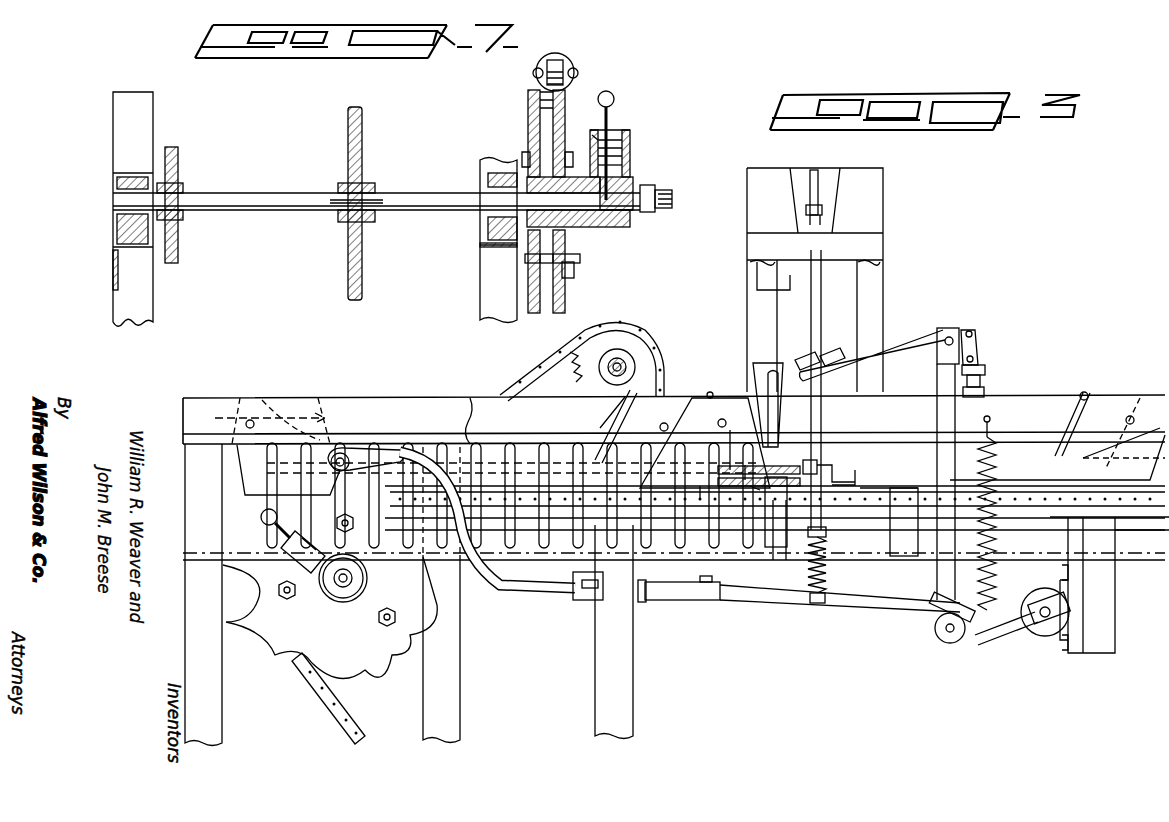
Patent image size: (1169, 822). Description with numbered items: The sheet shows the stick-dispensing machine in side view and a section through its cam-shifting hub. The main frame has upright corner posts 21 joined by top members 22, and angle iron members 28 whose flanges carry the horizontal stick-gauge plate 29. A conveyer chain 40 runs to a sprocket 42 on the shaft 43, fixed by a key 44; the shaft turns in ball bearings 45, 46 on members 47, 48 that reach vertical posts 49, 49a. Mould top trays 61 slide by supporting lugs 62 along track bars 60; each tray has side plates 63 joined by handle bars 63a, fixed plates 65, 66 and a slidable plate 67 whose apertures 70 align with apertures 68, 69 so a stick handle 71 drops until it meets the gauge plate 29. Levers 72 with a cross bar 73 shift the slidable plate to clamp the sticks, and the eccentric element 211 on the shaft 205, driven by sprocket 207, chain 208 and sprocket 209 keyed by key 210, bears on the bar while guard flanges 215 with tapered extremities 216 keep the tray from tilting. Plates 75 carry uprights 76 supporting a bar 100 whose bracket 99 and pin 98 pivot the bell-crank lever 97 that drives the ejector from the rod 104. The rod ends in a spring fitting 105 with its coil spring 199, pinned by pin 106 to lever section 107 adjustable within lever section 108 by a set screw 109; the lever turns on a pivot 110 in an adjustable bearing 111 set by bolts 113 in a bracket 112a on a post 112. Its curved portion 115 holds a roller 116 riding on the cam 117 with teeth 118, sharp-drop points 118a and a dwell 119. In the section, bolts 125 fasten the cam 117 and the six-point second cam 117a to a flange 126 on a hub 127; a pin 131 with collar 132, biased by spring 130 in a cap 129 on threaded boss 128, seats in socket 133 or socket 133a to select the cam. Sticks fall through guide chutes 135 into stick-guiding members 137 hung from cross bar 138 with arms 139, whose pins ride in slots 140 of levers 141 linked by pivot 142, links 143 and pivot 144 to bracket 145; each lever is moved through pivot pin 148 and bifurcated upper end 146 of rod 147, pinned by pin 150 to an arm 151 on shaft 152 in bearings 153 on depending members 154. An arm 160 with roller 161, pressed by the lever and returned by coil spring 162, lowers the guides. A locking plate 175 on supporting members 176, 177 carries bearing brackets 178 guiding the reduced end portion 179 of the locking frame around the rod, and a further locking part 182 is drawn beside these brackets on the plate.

In FIG. 5, the upright corner post 21 is at (190, 735).
In FIG. 5, the top member 22 is at (1042, 438).
In FIG. 5, the angle iron member 28 is at (1130, 562).
In FIG. 5, the stick-gauge plate 29 is at (497, 605).
In FIG. 5, the endless conveyer chain 40 is at (345, 732).
In FIG. 7, the sprocket 42 is at (362, 140).
In FIG. 7, the shaft 43 is at (410, 195).
In FIG. 5, the shaft 43 is at (340, 590).
In FIG. 7, the key 44 is at (368, 187).
In FIG. 7, the ball bearing 45 is at (115, 235).
In FIG. 7, the ball bearing 46 is at (487, 233).
In FIG. 7, the longitudinally extending member 47 is at (113, 265).
In FIG. 7, the member 48 is at (490, 248).
In FIG. 7, the vertical post 49 is at (150, 298).
In FIG. 7, the vertical post 49a is at (490, 296).
In FIG. 5, the vertical post 49a is at (455, 706).
In FIG. 5, the track bar 60 is at (183, 412).
In FIG. 5, the mould top tray 61 is at (490, 470).
In FIG. 5, the supporting lug 62 is at (252, 420).
In FIG. 5, the side plate 63 is at (702, 420).
In FIG. 5, the handle bar 63a is at (712, 395).
In FIG. 5, the horizontal plate 65 is at (716, 468).
In FIG. 5, the horizontal plate 66 is at (708, 488).
In FIG. 5, the slidable plate 67 is at (718, 478).
In FIG. 5, the aperture 68 is at (748, 465).
In FIG. 5, the aperture 69 is at (778, 502).
In FIG. 5, the aperture 70 is at (760, 490).
In FIG. 5, the stick handle 71 is at (460, 455).
In FIG. 5, the lever 72 is at (600, 428).
In FIG. 5, the cross bar 73 is at (612, 397).
In FIG. 5, the horizontal plate 75 is at (867, 390).
In FIG. 5, the upright 76 is at (757, 304).
In FIG. 5, the bell-crank lever 97 is at (816, 180).
In FIG. 5, the pin 98 is at (830, 222).
In FIG. 5, the bracket 99 is at (820, 233).
In FIG. 5, the bar 100 is at (868, 232).
In FIG. 5, the rod 104 is at (820, 262).
In FIG. 5, the spring fitting 105 is at (834, 584).
In FIG. 5, the pin 106 is at (818, 600).
In FIG. 5, the lever section 107 is at (872, 615).
In FIG. 5, the lever section 108 is at (670, 600).
In FIG. 5, the set screw 109 is at (712, 580).
In FIG. 5, the pivot 110 is at (603, 600).
In FIG. 5, the adjustable bearing 111 is at (578, 590).
In FIG. 5, the post 112 is at (597, 706).
In FIG. 5, the bracket 112a is at (590, 598).
In FIG. 5, the bolt 113 is at (645, 590).
In FIG. 7, the curved portion 115 is at (562, 55).
In FIG. 5, the curved portion 115 is at (378, 447).
In FIG. 7, the roller 116 is at (565, 66).
In FIG. 5, the roller 116 is at (345, 450).
In FIG. 7, the cam 117 is at (528, 135).
In FIG. 5, the cam 117 is at (305, 645).
In FIG. 7, the second cam 117a is at (528, 120).
In FIG. 5, the tooth 118 is at (240, 625).
In FIG. 5, the point 118a is at (242, 566).
In FIG. 5, the dwell 119 is at (261, 517).
In FIG. 7, the bolt 125 is at (580, 257).
In FIG. 5, the bolt 125 is at (383, 624).
In FIG. 7, the flange 126 is at (566, 269).
In FIG. 7, the hub 127 is at (630, 221).
In FIG. 5, the hub 127 is at (352, 572).
In FIG. 7, the threaded boss 128 is at (630, 167).
In FIG. 7, the cap 129 is at (628, 134).
In FIG. 5, the cap 129 is at (296, 562).
In FIG. 7, the spring 130 is at (592, 137).
In FIG. 7, the pin 131 is at (615, 100).
In FIG. 5, the pin 131 is at (283, 545).
In FIG. 7, the collar 132 is at (630, 151).
In FIG. 7, the socket 133 is at (630, 184).
In FIG. 7, the socket 133a is at (660, 192).
In FIG. 5, the guide chute 135 is at (745, 272).
In FIG. 5, the stick-guiding member 137 is at (790, 415).
In FIG. 5, the cross bar 138 is at (800, 356).
In FIG. 5, the arm 139 is at (825, 356).
In FIG. 5, the slot 140 is at (870, 352).
In FIG. 5, the lever 141 is at (950, 333).
In FIG. 5, the pivot 142 is at (990, 345).
In FIG. 5, the link 143 is at (990, 360).
In FIG. 5, the pivot 144 is at (990, 372).
In FIG. 5, the bracket 145 is at (990, 385).
In FIG. 5, the bifurcated upper end 146 is at (978, 345).
In FIG. 5, the rod 147 is at (925, 415).
In FIG. 5, the pivot pin 148 is at (963, 330).
In FIG. 5, the pin 150 is at (935, 612).
In FIG. 5, the arm 151 is at (1008, 605).
In FIG. 5, the shaft 152 is at (1042, 630).
In FIG. 5, the bearing 153 is at (1055, 636).
In FIG. 5, the depending member 154 is at (1105, 638).
In FIG. 5, the arm 160 is at (1005, 620).
In FIG. 5, the roller 161 is at (955, 640).
In FIG. 5, the coil spring 162 is at (992, 470).
In FIG. 5, the plate 175 is at (890, 486).
In FIG. 5, the supporting member 176 is at (905, 548).
In FIG. 5, the supporting member 177 is at (776, 548).
In FIG. 5, the bearing bracket 178 is at (850, 484).
In FIG. 5, the reduced end portion 179 is at (845, 468).
In FIG. 5, the clip 182 is at (810, 466).
In FIG. 5, the coil spring 199 is at (828, 570).
In FIG. 5, the shaft 205 is at (622, 356).
In FIG. 5, the sprocket 207 is at (552, 348).
In FIG. 5, the chain 208 is at (522, 372).
In FIG. 7, the sprocket 209 is at (178, 162).
In FIG. 7, the key 210 is at (183, 193).
In FIG. 5, the eccentric element 211 is at (630, 362).
In FIG. 5, the guard flange 215 is at (215, 418).
In FIG. 5, the tapered extremity 216 is at (318, 420).